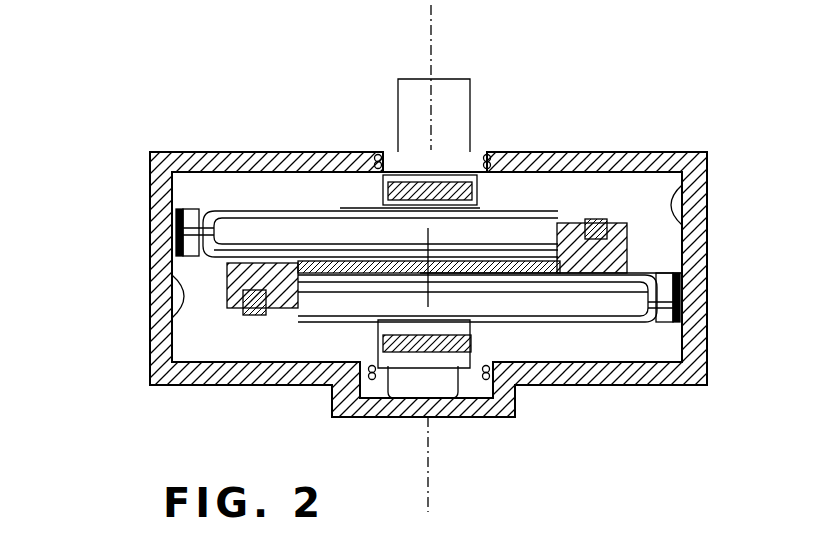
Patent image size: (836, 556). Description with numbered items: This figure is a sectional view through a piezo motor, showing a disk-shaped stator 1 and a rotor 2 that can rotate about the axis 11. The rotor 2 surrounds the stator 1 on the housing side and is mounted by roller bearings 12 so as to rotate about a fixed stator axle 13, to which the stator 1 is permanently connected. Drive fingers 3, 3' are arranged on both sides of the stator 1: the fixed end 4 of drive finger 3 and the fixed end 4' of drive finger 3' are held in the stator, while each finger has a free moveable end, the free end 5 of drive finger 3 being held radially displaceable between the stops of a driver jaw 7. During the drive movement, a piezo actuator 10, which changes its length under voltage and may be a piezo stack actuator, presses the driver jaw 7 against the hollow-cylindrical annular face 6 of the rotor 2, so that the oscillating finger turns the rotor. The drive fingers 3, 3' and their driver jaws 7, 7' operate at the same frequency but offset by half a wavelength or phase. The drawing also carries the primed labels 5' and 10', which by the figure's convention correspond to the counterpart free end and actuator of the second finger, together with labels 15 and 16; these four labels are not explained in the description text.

The stator 1 is at (322, 262).
The rotor 2 is at (698, 249).
The drive finger 3 is at (386, 166).
The drive finger 3' is at (473, 367).
The fixed end 4 is at (592, 179).
The fixed end 4' is at (262, 358).
The free moveable end 5 is at (149, 242).
The right retaining element 5' is at (700, 298).
The annular face 6 is at (180, 305).
The driver jaw 7 is at (116, 232).
The driver jaw 7' is at (731, 310).
The piezo actuator 10 is at (379, 174).
The lower leaf spring 10' is at (477, 364).
The axis 11 is at (437, 37).
The roller bearings 12 is at (488, 156).
The fixed stator axle 13 is at (455, 107).
The hub 15 is at (387, 197).
The lower axis 16 is at (440, 420).